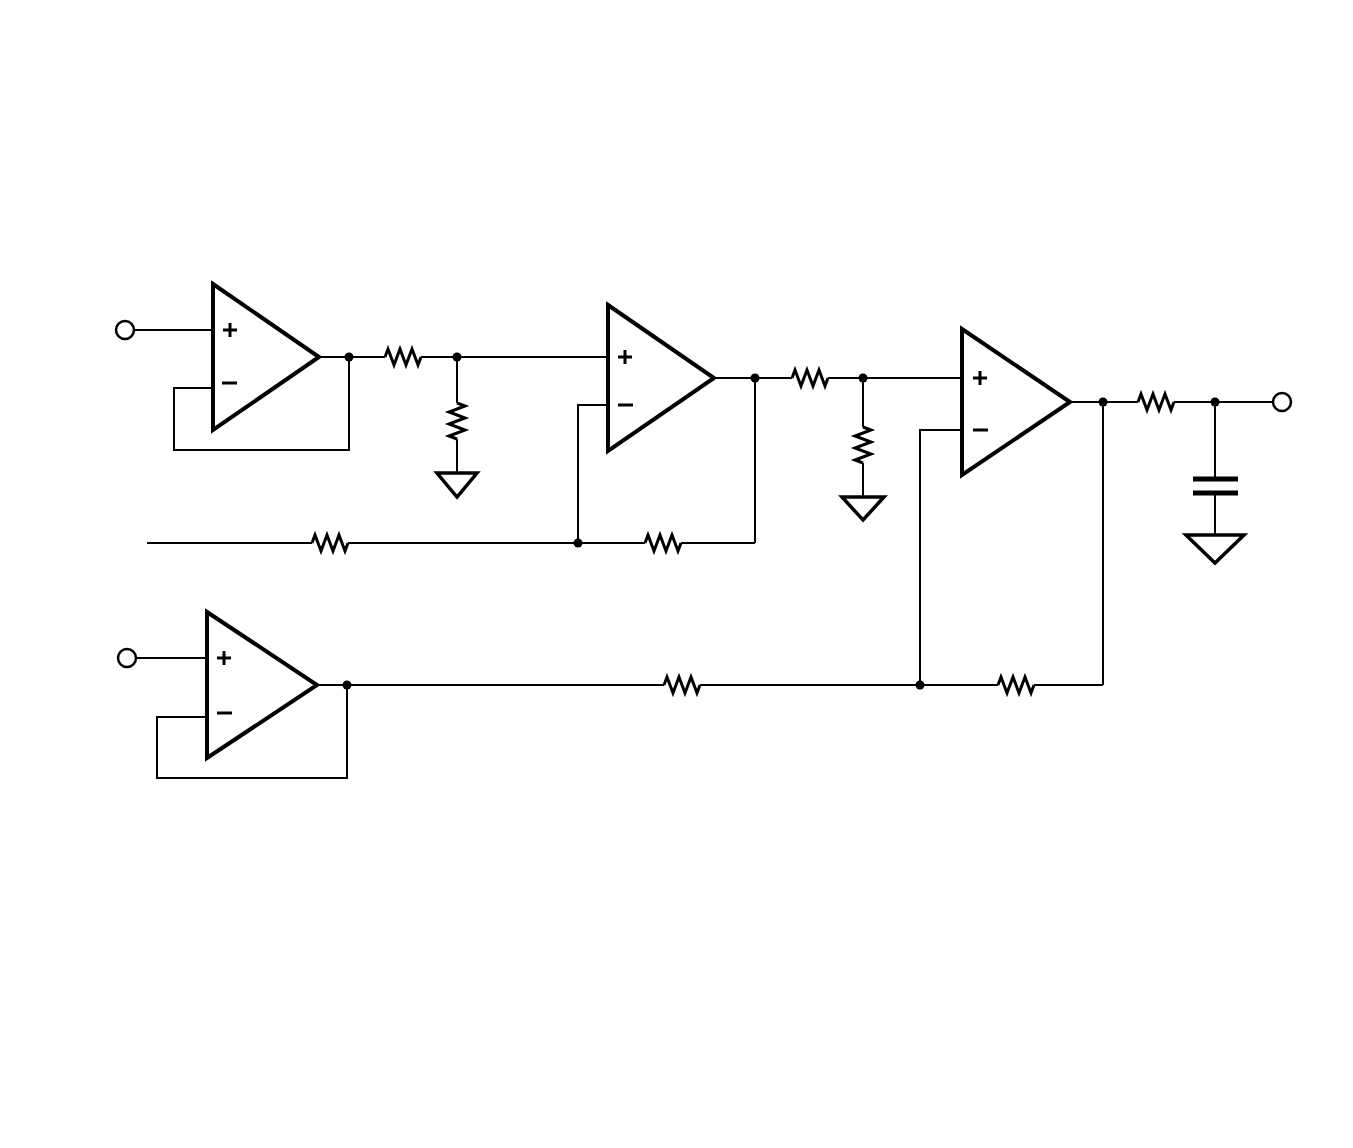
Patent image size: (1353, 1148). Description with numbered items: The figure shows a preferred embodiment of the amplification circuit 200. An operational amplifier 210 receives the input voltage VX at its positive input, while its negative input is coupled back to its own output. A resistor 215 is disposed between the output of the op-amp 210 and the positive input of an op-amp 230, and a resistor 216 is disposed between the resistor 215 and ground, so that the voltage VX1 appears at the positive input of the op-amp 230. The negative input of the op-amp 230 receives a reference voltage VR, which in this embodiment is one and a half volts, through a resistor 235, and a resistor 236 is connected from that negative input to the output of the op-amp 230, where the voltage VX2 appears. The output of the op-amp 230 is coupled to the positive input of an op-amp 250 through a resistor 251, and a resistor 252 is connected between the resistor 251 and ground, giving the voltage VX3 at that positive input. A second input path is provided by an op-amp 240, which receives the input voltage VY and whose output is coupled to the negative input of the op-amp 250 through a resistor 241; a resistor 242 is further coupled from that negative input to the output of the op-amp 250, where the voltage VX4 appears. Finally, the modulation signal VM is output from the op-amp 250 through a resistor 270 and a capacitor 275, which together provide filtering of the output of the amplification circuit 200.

The amplification circuit 200 is at (1284, 191).
The operational amplifier 210 is at (243, 300).
The resistor 215 is at (398, 342).
The resistor 216 is at (473, 413).
The operational amplifier 230 is at (650, 327).
The resistor 235 is at (327, 530).
The resistor 236 is at (668, 530).
The operational amplifier 240 is at (270, 643).
The resistor 241 is at (677, 670).
The resistor 242 is at (1007, 667).
The operational amplifier 250 is at (1002, 352).
The resistor 251 is at (803, 362).
The resistor 252 is at (850, 430).
The resistor 270 is at (1153, 377).
The capacitor 275 is at (1242, 482).